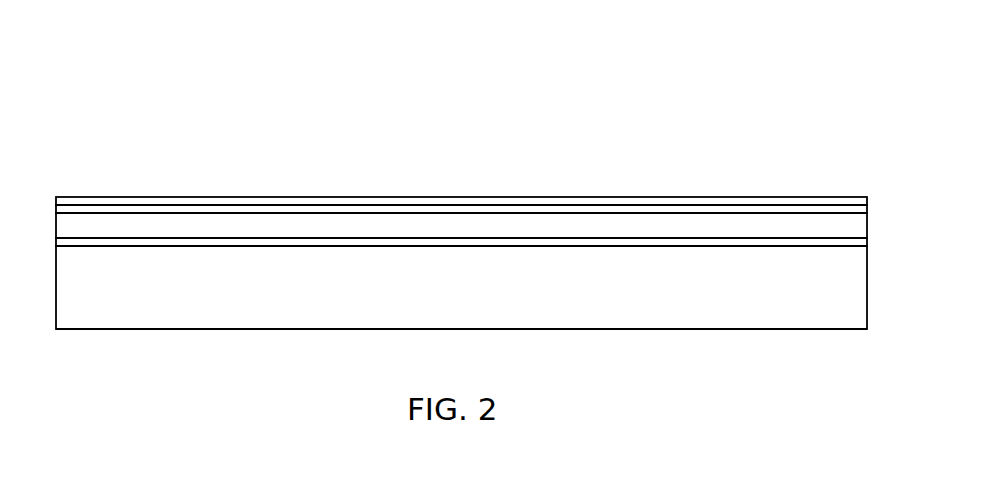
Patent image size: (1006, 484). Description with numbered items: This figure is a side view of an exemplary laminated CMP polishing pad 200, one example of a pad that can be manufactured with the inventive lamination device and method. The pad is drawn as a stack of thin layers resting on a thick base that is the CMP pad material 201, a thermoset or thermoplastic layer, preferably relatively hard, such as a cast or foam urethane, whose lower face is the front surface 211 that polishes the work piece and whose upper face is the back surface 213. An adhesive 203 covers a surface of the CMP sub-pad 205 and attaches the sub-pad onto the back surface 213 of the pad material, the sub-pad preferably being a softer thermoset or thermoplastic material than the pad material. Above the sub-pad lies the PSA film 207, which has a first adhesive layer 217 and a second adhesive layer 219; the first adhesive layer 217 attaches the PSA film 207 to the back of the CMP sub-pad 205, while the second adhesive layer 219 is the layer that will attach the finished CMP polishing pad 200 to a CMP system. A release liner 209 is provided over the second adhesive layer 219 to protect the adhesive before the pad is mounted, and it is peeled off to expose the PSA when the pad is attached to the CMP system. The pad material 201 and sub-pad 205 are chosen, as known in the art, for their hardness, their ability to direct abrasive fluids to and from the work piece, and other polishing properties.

The CMP polishing pad 200 is at (142, 116).
The CMP pad material 201 is at (868, 303).
The adhesive 203 is at (867, 243).
The CMP sub-pad 205 is at (867, 228).
The PSA film 207 is at (867, 208).
The release liner 209 is at (867, 200).
The front surface 211 is at (847, 331).
The back surface 213 is at (837, 247).
The first adhesive layer 217 is at (787, 212).
The second adhesive layer 219 is at (768, 205).